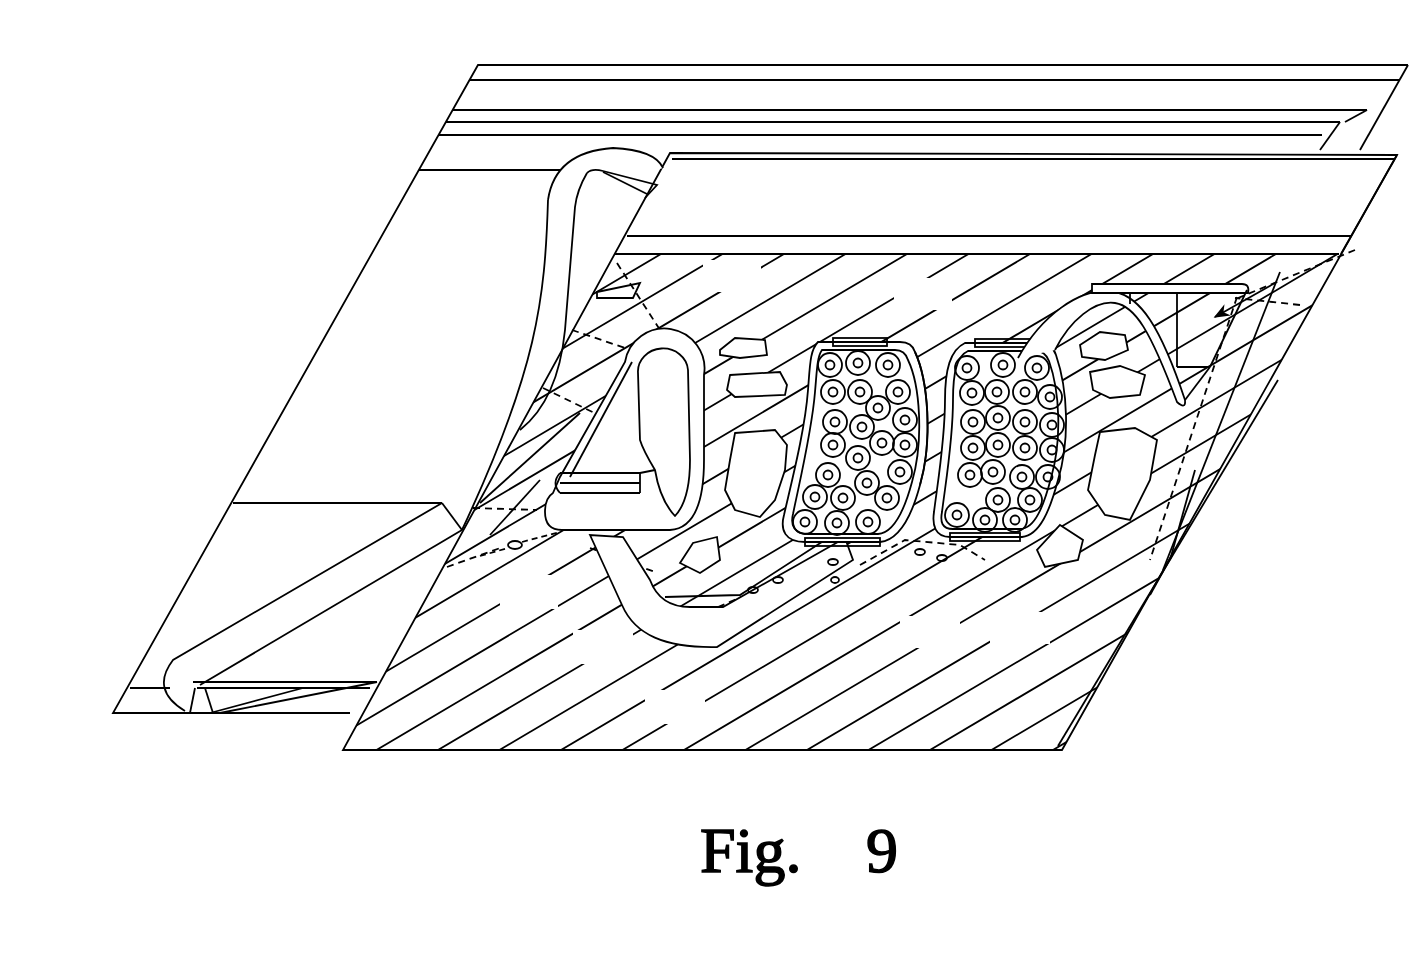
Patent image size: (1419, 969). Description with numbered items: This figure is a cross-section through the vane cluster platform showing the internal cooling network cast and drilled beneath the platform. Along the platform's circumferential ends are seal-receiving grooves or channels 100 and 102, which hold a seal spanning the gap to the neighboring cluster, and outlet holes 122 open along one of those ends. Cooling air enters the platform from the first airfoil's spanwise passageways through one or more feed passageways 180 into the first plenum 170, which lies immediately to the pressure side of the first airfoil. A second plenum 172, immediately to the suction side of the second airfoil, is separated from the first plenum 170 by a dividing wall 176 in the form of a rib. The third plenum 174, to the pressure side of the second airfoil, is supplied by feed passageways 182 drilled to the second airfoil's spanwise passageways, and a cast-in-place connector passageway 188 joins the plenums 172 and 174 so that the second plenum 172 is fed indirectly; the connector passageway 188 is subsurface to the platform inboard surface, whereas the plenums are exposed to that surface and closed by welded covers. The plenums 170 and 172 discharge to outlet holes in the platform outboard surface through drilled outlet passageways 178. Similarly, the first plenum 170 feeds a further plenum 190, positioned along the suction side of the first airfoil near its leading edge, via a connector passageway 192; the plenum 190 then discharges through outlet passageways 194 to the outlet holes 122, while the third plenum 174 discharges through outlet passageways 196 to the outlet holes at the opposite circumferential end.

The groove or channel 100 is at (1240, 393).
The groove or channel 102 is at (532, 427).
The outlet holes 122 is at (1163, 574).
The first plenum 170 is at (983, 358).
The second plenum 172 is at (873, 350).
The third plenum 174 is at (666, 380).
The dividing wall 176 is at (920, 362).
The outlet passageways 178 is at (945, 566).
The feed passageways 180 is at (1067, 360).
The feed passageways 182 is at (705, 345).
The connector passageway 188 is at (702, 617).
The plenum 190 is at (1343, 263).
The connector passageway 192 is at (1037, 310).
The outlet passageways 194 is at (1190, 535).
The outlet passageways 196 is at (518, 549).